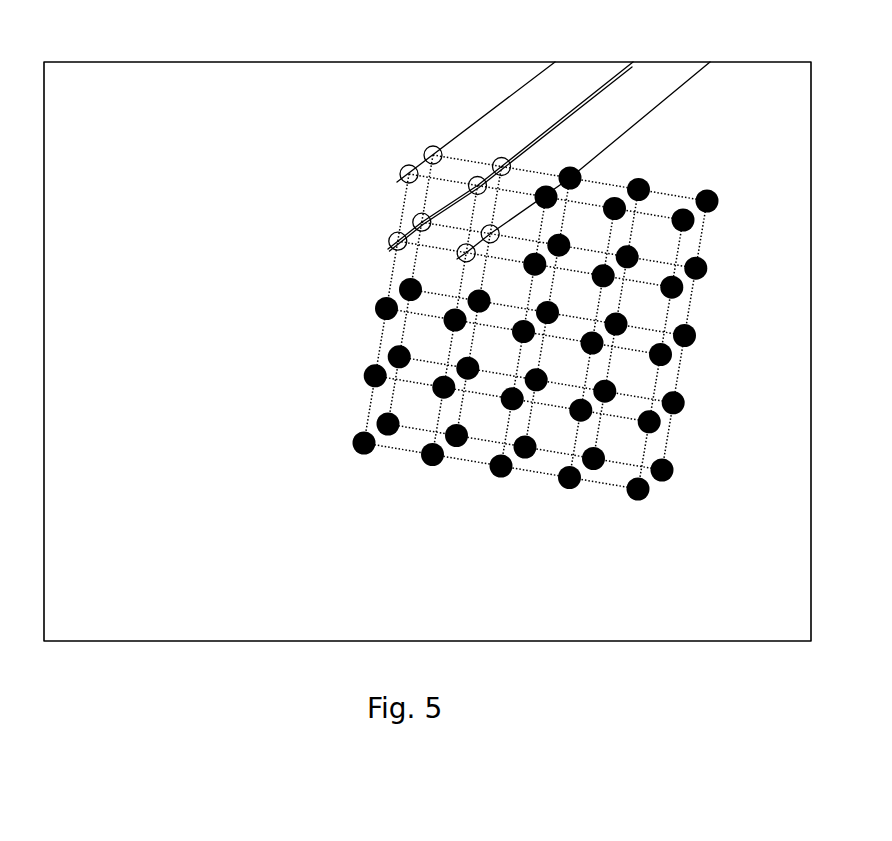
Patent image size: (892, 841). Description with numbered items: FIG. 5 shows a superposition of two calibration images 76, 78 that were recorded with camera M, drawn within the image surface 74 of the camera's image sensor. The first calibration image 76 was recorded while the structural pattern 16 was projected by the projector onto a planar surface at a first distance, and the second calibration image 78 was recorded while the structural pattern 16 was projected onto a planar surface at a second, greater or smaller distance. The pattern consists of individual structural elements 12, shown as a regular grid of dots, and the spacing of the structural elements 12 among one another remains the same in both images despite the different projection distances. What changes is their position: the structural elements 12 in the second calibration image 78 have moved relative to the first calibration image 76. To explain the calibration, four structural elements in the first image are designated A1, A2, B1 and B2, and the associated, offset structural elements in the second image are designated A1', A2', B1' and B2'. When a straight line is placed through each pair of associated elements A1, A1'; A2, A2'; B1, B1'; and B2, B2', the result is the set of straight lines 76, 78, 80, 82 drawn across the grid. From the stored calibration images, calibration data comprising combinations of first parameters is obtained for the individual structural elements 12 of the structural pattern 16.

The structural element 12 is at (648, 187).
The structural pattern 16 is at (720, 186).
The image surface 74 is at (128, 86).
The first calibration image 76 is at (524, 83).
The second calibration image 78 is at (590, 88).
The straight line 80 is at (627, 70).
The straight line 82 is at (682, 83).
The structural element A1 is at (402, 146).
The structural element A1' is at (444, 124).
The structural element A2 is at (519, 169).
The structural element A2' is at (503, 146).
The structural element B1 is at (372, 236).
The structural element B1' is at (397, 212).
The structural element B2 is at (406, 277).
The structural element B2' is at (419, 251).